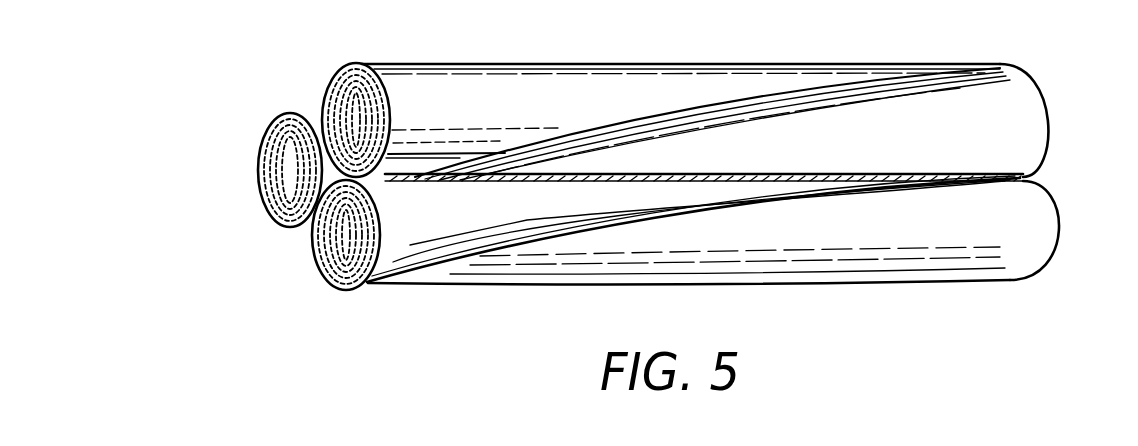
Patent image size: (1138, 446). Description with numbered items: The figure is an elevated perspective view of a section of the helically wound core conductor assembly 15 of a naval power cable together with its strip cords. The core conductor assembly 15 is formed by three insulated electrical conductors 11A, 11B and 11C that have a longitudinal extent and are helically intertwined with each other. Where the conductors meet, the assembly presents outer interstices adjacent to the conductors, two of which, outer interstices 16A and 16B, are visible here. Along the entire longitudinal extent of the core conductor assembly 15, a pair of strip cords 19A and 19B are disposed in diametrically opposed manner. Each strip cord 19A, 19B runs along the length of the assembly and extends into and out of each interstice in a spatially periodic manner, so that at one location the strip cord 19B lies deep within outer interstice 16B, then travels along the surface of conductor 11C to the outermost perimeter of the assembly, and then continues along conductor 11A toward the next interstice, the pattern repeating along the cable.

The core conductor assembly 15 is at (240, 243).
The electrical conductor 11A is at (650, 268).
The electrical conductor 11B is at (450, 77).
The electrical conductor 11C is at (992, 100).
The outer interstice 16A is at (1012, 197).
The outer interstice 16B is at (550, 137).
The strip cord 19A is at (313, 227).
The strip cord 19B is at (623, 173).